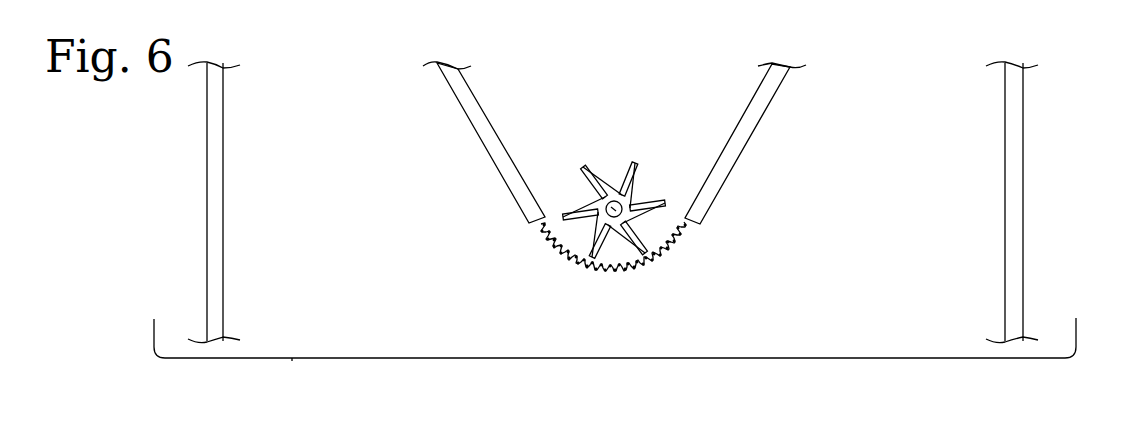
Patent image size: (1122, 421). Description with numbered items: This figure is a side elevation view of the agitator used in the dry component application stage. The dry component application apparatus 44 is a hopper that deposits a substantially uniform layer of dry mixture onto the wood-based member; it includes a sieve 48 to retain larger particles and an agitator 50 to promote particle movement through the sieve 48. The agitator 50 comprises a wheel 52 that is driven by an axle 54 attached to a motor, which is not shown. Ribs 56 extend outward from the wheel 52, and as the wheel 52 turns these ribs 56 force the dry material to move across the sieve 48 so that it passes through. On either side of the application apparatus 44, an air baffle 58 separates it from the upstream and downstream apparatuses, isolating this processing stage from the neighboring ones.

The dry component application apparatus 44 is at (752, 134).
The sieve 48 is at (585, 268).
The agitator 50 is at (607, 170).
The wheel 52 is at (645, 227).
The axle 54 is at (586, 206).
The ribs 56 is at (590, 167).
The air baffle 58 is at (224, 167).